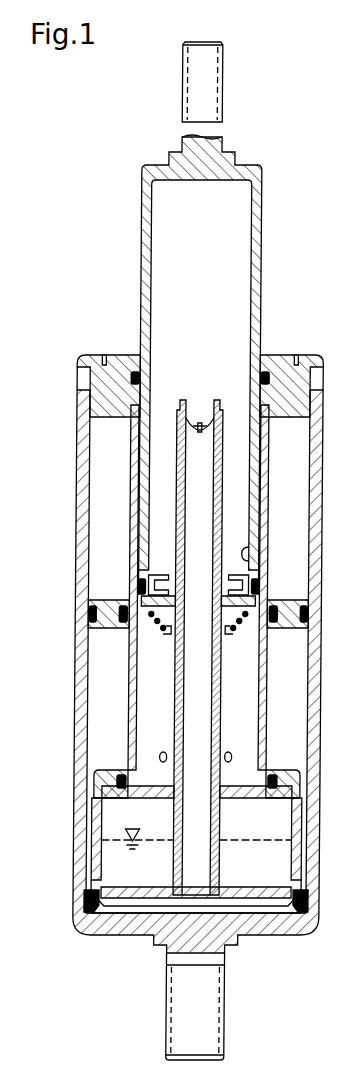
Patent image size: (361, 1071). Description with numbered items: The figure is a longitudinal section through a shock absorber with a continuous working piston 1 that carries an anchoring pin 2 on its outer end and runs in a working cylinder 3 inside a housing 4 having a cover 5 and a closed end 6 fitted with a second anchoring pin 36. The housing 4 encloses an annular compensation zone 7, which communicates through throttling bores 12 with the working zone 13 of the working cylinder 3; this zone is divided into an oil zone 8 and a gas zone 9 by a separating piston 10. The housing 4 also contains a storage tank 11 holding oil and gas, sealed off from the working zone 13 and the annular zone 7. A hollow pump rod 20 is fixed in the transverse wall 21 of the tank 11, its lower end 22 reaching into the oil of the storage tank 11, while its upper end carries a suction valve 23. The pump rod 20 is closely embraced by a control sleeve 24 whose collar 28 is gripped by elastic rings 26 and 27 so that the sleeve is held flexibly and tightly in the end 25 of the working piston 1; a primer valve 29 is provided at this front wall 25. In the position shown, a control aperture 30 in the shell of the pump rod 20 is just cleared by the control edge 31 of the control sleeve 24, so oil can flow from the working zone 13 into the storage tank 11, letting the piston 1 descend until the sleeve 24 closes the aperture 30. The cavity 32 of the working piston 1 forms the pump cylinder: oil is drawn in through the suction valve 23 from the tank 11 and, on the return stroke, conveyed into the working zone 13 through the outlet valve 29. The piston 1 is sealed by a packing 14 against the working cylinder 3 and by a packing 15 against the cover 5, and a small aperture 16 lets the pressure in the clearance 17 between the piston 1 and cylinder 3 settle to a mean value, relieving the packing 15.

The working piston 1 is at (139, 225).
The pin 2 is at (202, 72).
The working cylinder 3 is at (132, 655).
The housing 4 is at (83, 530).
The cover 5 is at (112, 407).
The closed end 6 is at (124, 928).
The annular compensation zone 7 is at (92, 607).
The oil zone 8 is at (111, 726).
The gas zone 9 is at (284, 458).
The separating piston 10 is at (292, 636).
The storage tank 11 is at (251, 817).
The throttling bores 12 is at (131, 757).
The working zone 13 is at (150, 693).
The packing 14 is at (141, 582).
The packing 15 is at (130, 377).
The small diameter aperture 16 is at (264, 552).
The clearance 17 is at (139, 508).
The pump rod 20 is at (221, 720).
The transverse wall 21 is at (131, 796).
The end 22 is at (174, 862).
The suction valve 23 is at (200, 425).
The control sleeve 24 is at (173, 455).
The end 25 is at (149, 597).
The elastic ring 26 is at (252, 583).
The elastic ring 27 is at (267, 597).
The collar 28 is at (226, 590).
The primer valve 29 is at (285, 645).
The control aperture 30 is at (174, 645).
The control edge 31 is at (224, 645).
The cavity 32 is at (167, 259).
The pin 36 is at (212, 988).